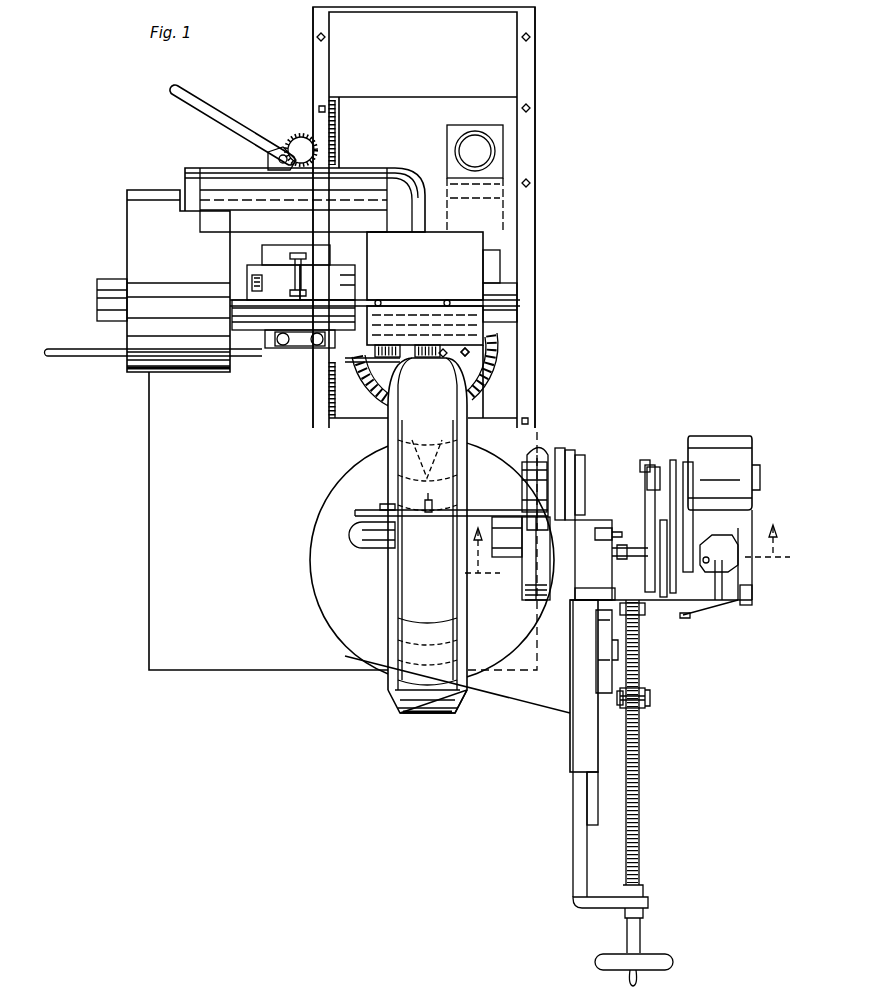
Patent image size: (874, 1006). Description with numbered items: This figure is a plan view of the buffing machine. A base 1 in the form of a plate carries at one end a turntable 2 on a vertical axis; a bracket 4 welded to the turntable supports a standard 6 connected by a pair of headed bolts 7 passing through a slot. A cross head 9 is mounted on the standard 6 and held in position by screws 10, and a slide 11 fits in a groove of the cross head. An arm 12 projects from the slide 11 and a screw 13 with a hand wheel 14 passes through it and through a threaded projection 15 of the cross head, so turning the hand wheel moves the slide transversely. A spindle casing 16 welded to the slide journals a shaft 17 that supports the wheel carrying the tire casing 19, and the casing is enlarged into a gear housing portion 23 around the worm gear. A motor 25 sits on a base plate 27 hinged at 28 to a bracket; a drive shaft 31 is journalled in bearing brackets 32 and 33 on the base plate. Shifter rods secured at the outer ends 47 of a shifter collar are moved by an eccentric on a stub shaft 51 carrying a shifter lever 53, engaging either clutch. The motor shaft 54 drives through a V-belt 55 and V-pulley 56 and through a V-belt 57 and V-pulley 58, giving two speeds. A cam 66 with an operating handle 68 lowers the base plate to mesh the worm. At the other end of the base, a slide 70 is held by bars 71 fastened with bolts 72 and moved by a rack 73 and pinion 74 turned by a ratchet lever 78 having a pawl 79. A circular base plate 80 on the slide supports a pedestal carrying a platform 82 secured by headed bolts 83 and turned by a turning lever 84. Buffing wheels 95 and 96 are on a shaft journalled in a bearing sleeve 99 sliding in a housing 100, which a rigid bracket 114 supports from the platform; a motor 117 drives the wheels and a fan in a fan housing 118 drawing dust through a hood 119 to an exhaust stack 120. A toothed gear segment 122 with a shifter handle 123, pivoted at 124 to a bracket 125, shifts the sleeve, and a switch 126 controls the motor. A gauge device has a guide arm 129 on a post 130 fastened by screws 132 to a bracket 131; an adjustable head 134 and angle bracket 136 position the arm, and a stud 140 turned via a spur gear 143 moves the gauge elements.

The base 1 is at (150, 593).
The turntable 2 is at (358, 656).
The bracket 4 is at (590, 810).
The standard 6 is at (607, 678).
The headed bolts 7 is at (627, 564).
The cross head 9 is at (585, 735).
The screws 10 is at (640, 612).
The slide 11 is at (583, 591).
The arm 12 is at (600, 902).
The screw 13 is at (640, 777).
The hand wheel 14 is at (650, 957).
The threaded projection 15 is at (648, 703).
The spindle casing 16 is at (512, 558).
The shaft 17 is at (372, 549).
The tire casing 19 is at (410, 592).
The gear housing portion 23 is at (535, 602).
The motor 25 is at (735, 445).
The base plate 27 is at (735, 535).
The hinge arrangement 28 is at (752, 595).
The drive shaft 31 is at (622, 546).
The bearing bracket 32 is at (703, 545).
The bearing bracket 33 is at (604, 569).
The radially-projecting outer ends 47 is at (663, 598).
The stub shaft 51 is at (715, 608).
The shifter lever 53 is at (690, 620).
The motor shaft 54 is at (646, 460).
The V-belt 55 is at (672, 460).
The V-pulley 56 is at (689, 462).
The V-belt 57 is at (646, 500).
The V-pulley 58 is at (647, 475).
The cam 66 is at (592, 538).
The operating handle 68 is at (601, 527).
The slide 70 is at (505, 393).
The bars 71 is at (318, 68).
The bolts 72 is at (317, 37).
The rack 73 is at (328, 118).
The pinion 74 is at (300, 142).
The ratchet lever 78 is at (208, 108).
The pawl 79 is at (268, 156).
The circular base plate 80 is at (372, 375).
The platform 82 is at (450, 380).
The headed bolts 83 is at (470, 353).
The turning lever 84 is at (72, 352).
The buffing wheel 95 is at (376, 362).
The buffing wheel 96 is at (445, 341).
The bearing sleeve 99 is at (230, 300).
The housing 100 is at (250, 335).
The rigid bracket 114 is at (276, 236).
The motor 117 is at (213, 190).
The fan housing 118 is at (498, 262).
The hood 119 is at (455, 274).
The exhaust stack 120 is at (490, 144).
The toothed gear segment 122 is at (333, 296).
The shifter handle 123 is at (346, 300).
The pivot 124 is at (292, 302).
The bracket 125 is at (299, 275).
The switch 126 is at (291, 349).
The guide arm 129 is at (355, 512).
The post 130 is at (560, 475).
The bracket 131 is at (572, 475).
The screws 132 is at (582, 478).
The adjustable head 134 is at (548, 467).
The angle bracket 136 is at (524, 493).
The stud 140 is at (385, 504).
The spur gear 143 is at (428, 500).